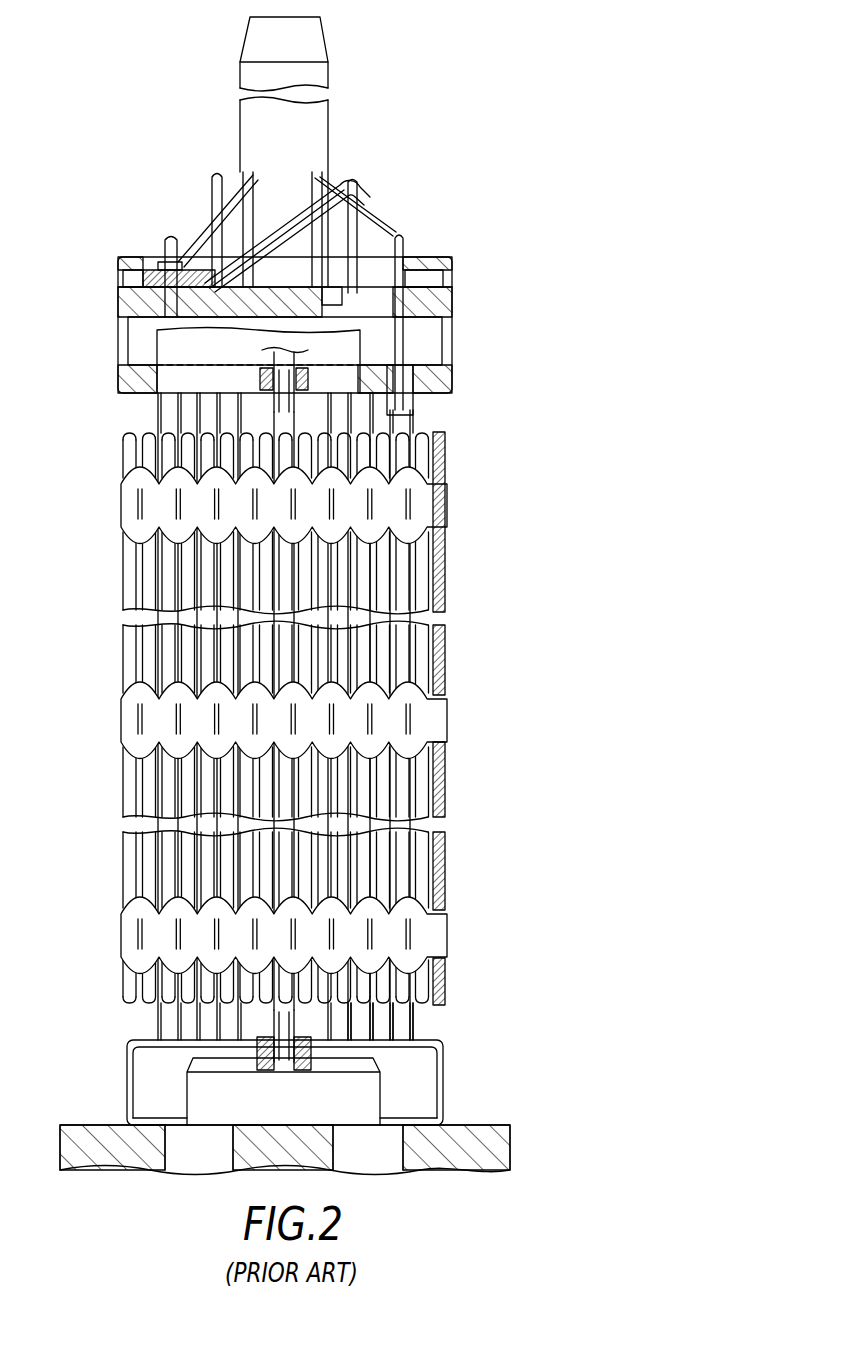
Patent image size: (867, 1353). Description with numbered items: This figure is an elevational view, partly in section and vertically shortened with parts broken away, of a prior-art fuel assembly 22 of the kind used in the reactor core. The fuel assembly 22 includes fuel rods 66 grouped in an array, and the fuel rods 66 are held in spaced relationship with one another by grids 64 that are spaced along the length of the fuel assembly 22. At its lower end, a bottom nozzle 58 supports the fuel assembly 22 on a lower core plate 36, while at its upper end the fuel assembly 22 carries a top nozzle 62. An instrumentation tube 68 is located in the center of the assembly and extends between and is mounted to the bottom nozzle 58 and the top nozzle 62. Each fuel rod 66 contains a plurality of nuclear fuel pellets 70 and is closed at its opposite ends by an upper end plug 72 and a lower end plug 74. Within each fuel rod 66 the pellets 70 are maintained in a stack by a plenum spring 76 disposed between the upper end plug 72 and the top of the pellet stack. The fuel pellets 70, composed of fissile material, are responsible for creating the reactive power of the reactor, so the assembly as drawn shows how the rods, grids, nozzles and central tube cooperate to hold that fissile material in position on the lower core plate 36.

The fuel assembly 22 is at (527, 290).
The top nozzle 62 is at (452, 282).
The upper end plug 72 is at (447, 437).
The plenum spring 76 is at (447, 497).
The nuclear fuel pellets 70 is at (447, 600).
The grids 64 is at (118, 490).
The fuel rods 66 is at (118, 623).
The bottom nozzle 58 is at (445, 1060).
The instrumentation tube 68 is at (289, 1070).
The lower end plug 74 is at (400, 1007).
The lower core plate 36 is at (478, 1124).